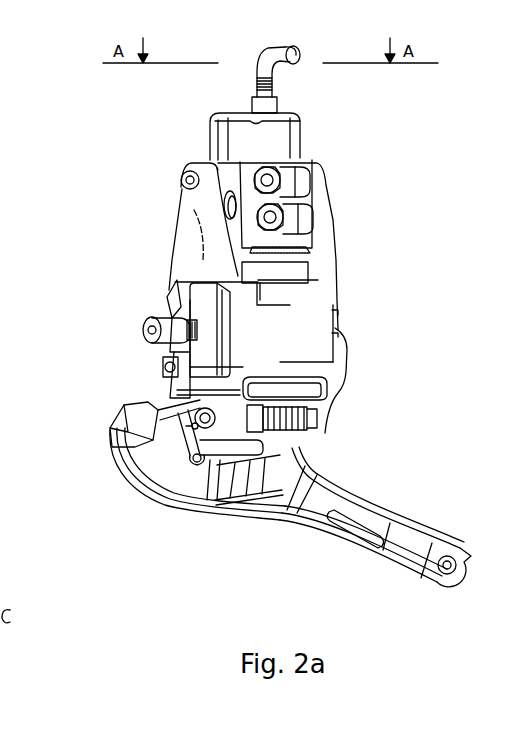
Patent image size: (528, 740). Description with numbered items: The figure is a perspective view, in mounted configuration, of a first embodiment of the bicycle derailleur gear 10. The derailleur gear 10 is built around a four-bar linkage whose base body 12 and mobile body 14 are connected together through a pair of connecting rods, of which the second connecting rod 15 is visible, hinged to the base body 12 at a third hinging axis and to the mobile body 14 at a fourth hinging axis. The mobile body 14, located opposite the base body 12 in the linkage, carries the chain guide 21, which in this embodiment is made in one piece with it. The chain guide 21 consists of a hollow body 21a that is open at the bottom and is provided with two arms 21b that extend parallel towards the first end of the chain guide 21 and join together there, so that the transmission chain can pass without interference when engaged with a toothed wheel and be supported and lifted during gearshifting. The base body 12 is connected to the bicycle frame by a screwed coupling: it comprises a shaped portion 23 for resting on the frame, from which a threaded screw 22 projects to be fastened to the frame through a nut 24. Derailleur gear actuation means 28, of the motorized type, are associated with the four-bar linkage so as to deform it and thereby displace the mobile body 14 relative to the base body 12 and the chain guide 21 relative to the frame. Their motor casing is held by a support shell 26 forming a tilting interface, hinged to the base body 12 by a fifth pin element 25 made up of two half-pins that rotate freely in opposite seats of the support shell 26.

The bicycle derailleur gear 10 is at (452, 255).
The base body 12 is at (305, 300).
The mobile body 14 is at (185, 386).
The second connecting rod 15 is at (322, 395).
The chain guide 21 is at (384, 500).
The hollow body 21a is at (162, 453).
The arms 21b is at (320, 520).
The threaded screw 22 is at (180, 295).
The shaped portion 23 is at (200, 357).
The nut 24 is at (163, 313).
The fifth pin element 25 is at (182, 180).
The support shell 26 is at (237, 177).
The derailleur gear actuation means 28 is at (303, 137).